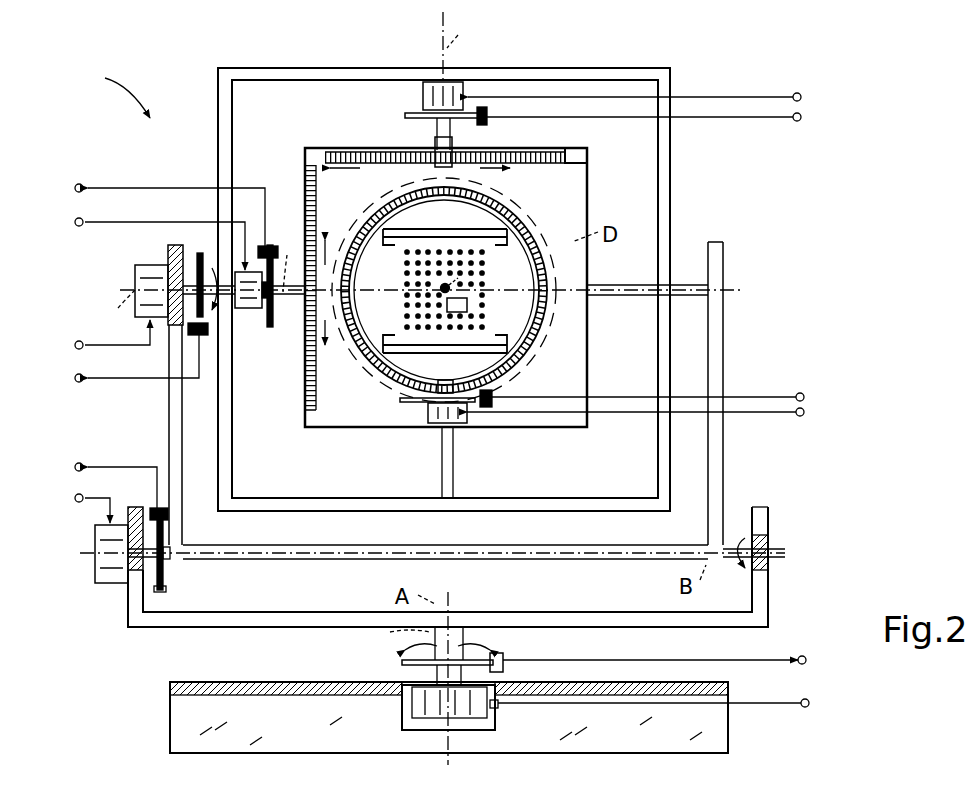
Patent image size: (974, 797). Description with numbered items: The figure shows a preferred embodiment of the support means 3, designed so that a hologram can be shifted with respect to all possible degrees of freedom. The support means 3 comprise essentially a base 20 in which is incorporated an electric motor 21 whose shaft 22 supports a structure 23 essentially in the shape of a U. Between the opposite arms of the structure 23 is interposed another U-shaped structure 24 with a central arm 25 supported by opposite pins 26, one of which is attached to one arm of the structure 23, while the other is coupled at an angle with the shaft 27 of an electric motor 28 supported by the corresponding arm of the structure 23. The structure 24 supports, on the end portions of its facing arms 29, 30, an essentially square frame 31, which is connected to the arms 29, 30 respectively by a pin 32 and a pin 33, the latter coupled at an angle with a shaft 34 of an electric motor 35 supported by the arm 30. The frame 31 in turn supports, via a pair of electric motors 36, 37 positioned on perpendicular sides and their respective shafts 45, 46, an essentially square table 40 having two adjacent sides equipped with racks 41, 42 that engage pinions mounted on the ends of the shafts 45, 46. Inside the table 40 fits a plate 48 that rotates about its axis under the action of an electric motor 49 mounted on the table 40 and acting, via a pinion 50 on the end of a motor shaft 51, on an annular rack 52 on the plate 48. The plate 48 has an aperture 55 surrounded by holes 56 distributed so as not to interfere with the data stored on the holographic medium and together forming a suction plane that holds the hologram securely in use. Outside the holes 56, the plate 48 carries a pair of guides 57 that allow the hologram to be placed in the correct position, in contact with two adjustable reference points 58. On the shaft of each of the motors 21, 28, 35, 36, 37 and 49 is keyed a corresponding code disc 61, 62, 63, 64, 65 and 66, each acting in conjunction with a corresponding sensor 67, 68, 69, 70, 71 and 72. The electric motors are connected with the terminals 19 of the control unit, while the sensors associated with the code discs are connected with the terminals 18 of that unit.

The support means 3 is at (115, 92).
The terminals 18 is at (72, 186).
The terminals 19 is at (72, 221).
The base 20 is at (252, 682).
The electric motor 21 is at (420, 700).
The shaft 22 is at (455, 625).
The structure 23 is at (215, 627).
The structure 24 is at (548, 562).
The central arm 25 is at (362, 562).
The pins 26 is at (767, 548).
The shaft 27 is at (150, 570).
The electric motor 28 is at (112, 576).
The arm 29 is at (717, 348).
The arm 30 is at (170, 392).
The frame 31 is at (248, 514).
The pin 32 is at (690, 287).
The pin 33 is at (215, 283).
The shaft 34 is at (185, 262).
The electric motor 35 is at (145, 282).
The electric motor 36 is at (248, 310).
The electric motor 37 is at (440, 82).
The table 40 is at (318, 428).
The rack 41 is at (310, 185).
The rack 42 is at (350, 152).
The shaft 45 is at (263, 300).
The shaft 46 is at (425, 112).
The plate 48 is at (537, 207).
The electric motor 49 is at (440, 425).
The pinion 50 is at (438, 388).
The motor shaft 51 is at (430, 412).
The annular rack 52 is at (398, 200).
The aperture 55 is at (467, 300).
The holes 56 is at (471, 252).
The guides 57 is at (507, 229).
The adjustable reference points 58 is at (385, 225).
The code disc 61 is at (410, 660).
The code disc 62 is at (166, 572).
The code disc 63 is at (199, 253).
The code disc 64 is at (273, 320).
The code disc 65 is at (420, 116).
The code disc 66 is at (405, 400).
The sensor 67 is at (502, 660).
The sensor 68 is at (157, 508).
The sensor 69 is at (202, 338).
The sensor 70 is at (270, 246).
The sensor 71 is at (490, 120).
The sensor 72 is at (488, 407).